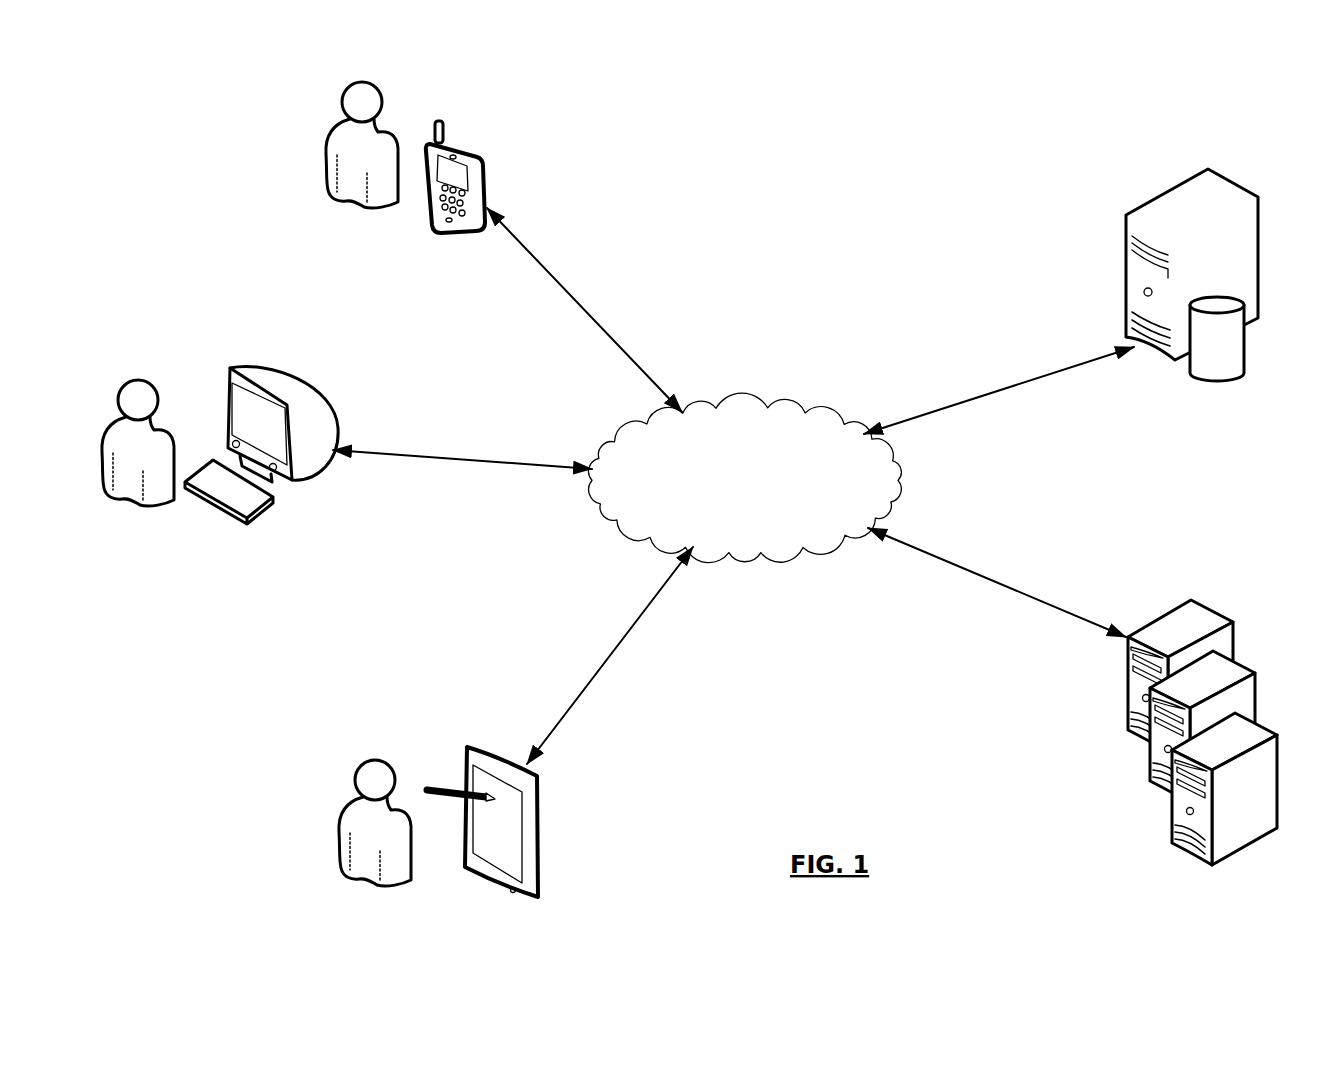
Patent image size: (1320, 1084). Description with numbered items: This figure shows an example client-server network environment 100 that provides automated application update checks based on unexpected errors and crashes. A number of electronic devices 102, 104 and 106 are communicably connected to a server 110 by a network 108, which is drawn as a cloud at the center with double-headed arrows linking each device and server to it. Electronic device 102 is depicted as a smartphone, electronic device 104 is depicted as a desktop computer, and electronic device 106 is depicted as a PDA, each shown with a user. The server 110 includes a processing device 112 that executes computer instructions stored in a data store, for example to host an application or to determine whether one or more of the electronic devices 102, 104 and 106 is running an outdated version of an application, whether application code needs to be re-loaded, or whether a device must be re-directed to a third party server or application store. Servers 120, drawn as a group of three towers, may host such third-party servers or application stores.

The network environment 100 is at (871, 136).
The electronic device 102 is at (468, 142).
The electronic device 104 is at (300, 380).
The electronic device 106 is at (475, 745).
The network 108 is at (743, 403).
The server 110 is at (1132, 376).
The processing device 112 is at (1232, 178).
The servers 120 is at (1126, 822).